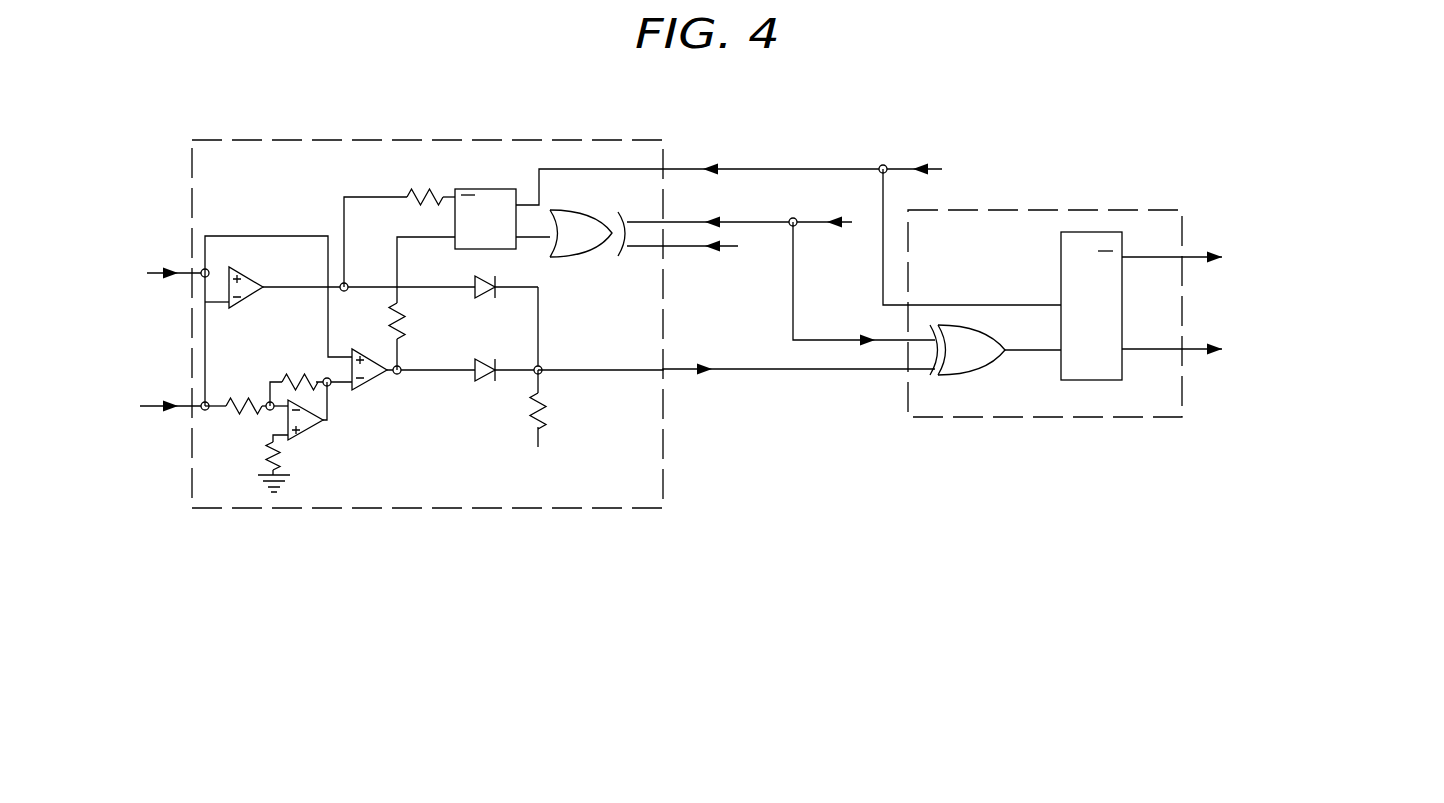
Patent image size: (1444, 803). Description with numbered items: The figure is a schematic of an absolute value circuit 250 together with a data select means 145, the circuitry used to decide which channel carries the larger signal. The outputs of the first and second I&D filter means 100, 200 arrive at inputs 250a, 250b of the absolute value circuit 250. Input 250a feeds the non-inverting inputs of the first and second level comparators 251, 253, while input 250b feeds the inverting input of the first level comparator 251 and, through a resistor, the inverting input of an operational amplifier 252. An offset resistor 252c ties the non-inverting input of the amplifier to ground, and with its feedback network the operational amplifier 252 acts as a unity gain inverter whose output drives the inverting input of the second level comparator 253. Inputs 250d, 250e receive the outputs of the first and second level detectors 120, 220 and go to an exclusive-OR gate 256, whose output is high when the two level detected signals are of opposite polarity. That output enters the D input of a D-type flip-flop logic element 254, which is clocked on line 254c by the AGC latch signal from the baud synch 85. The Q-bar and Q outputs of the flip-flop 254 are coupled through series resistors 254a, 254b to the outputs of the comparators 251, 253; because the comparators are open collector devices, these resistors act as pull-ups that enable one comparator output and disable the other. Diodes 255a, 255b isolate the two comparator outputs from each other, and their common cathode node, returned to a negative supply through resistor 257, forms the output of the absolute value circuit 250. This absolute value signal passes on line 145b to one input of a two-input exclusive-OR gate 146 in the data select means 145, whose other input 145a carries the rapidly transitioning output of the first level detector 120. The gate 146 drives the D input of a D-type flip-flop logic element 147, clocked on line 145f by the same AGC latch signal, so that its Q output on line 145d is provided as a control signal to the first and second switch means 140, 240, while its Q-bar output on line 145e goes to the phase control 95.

The absolute value circuit 250 is at (363, 140).
The input of absolute value circuit 250a is at (167, 277).
The input of absolute value circuit 250b is at (151, 403).
The input of absolute value circuit 250d is at (642, 222).
The input of absolute value circuit 250e is at (641, 247).
The first level comparator 251 is at (252, 286).
The operational amplifier 252 is at (311, 429).
The offset resistor 252c is at (266, 460).
The second level comparator 253 is at (372, 385).
The D-type flip-flop logic element 254 is at (490, 189).
The series resistor 254a is at (420, 190).
The series resistor 254b is at (395, 323).
The AGC latch clock line 254c is at (641, 169).
The diode 255a is at (491, 298).
The diode 255b is at (489, 382).
The exclusive-OR gate 256 is at (565, 213).
The resistor 257 is at (546, 418).
The data select means 145 is at (1066, 210).
The input of data select means 145a is at (873, 337).
The data input line 145b is at (849, 374).
The Q output to switches 145d is at (1147, 349).
The Q-bar output to phase control 145e is at (1151, 257).
The clock input line 145f is at (966, 305).
The two-input exclusive-OR gate 146 is at (987, 336).
The D-type flip-flop logic element 147 is at (1061, 238).
The first I&D filter means 100 is at (117, 253).
The second I&D filter means 200 is at (115, 444).
The baud synchronizer 85 is at (914, 132).
The first level detector 120 is at (802, 192).
The second level detector 220 is at (730, 284).
The phase control 95 is at (1290, 257).
The first switch means 140 is at (1310, 339).
The second switch means 240 is at (1312, 371).